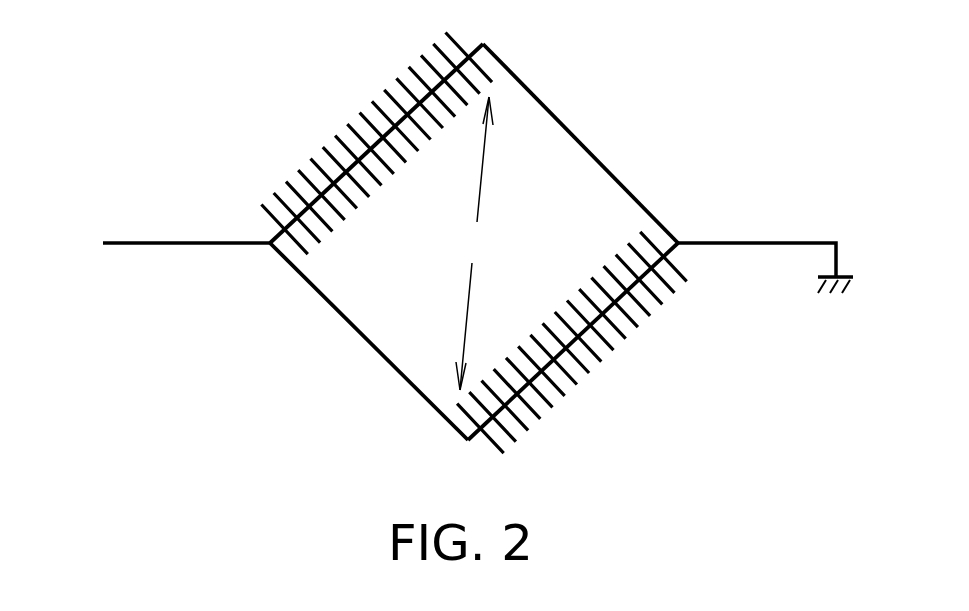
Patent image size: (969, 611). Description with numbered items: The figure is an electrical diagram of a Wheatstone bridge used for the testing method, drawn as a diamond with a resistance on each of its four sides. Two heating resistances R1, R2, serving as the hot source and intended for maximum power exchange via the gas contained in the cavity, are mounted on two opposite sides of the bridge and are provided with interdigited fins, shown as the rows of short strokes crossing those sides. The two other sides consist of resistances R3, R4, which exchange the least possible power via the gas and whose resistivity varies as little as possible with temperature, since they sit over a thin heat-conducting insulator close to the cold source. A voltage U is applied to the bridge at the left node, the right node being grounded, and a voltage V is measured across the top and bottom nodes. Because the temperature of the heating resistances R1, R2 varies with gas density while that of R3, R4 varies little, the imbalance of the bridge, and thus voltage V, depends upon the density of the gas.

The heating resistance R1 is at (376, 144).
The heating resistance R2 is at (572, 342).
The resistance R3 is at (352, 295).
The resistance R4 is at (565, 157).
The voltage applied to the bridge U is at (186, 228).
The measured voltage V is at (474, 243).